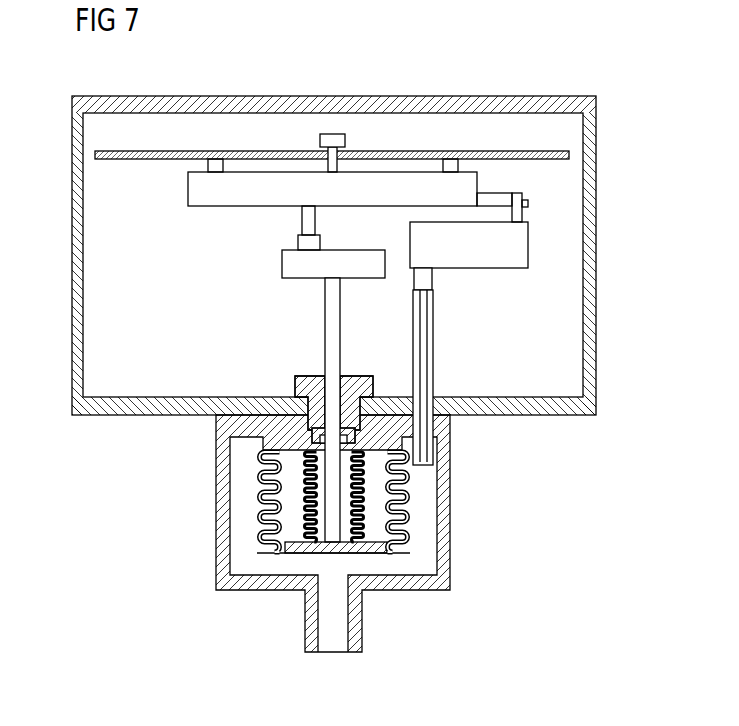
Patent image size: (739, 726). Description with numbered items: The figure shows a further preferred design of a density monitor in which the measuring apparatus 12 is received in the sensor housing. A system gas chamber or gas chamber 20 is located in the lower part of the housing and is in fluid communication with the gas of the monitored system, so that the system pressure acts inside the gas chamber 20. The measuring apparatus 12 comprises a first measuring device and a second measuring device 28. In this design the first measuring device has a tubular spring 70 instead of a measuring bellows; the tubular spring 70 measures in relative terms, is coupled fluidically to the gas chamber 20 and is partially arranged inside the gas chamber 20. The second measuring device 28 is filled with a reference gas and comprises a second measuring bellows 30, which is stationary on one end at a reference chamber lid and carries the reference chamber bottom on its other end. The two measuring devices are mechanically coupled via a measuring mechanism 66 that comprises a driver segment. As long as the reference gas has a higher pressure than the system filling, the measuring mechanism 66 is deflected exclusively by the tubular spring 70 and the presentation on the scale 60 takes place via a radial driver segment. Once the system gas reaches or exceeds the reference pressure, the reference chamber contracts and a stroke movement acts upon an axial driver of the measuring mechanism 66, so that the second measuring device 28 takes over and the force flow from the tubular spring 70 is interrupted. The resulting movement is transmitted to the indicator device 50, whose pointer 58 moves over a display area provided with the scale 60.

The indicator device 50 is at (538, 58).
The measuring apparatus 12 is at (312, 465).
The gas chamber 20 is at (427, 557).
The second measuring device 28 is at (380, 507).
The second measuring bellows 30 is at (362, 473).
The pointer 58 is at (330, 133).
The scale 60 is at (255, 150).
The measuring mechanism 66 is at (484, 187).
The tubular spring 70 is at (518, 243).